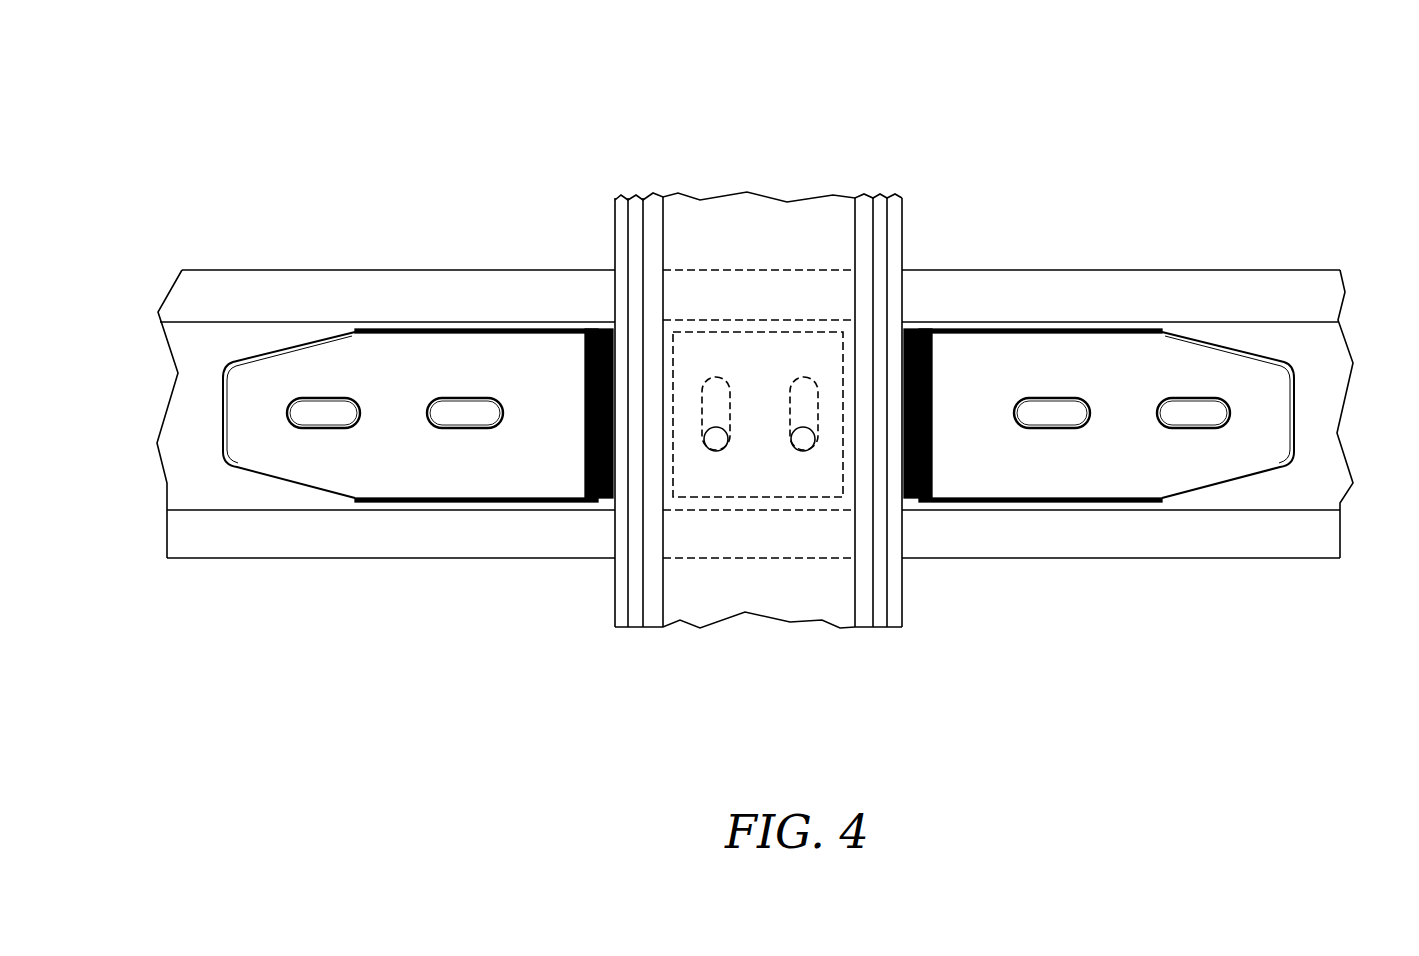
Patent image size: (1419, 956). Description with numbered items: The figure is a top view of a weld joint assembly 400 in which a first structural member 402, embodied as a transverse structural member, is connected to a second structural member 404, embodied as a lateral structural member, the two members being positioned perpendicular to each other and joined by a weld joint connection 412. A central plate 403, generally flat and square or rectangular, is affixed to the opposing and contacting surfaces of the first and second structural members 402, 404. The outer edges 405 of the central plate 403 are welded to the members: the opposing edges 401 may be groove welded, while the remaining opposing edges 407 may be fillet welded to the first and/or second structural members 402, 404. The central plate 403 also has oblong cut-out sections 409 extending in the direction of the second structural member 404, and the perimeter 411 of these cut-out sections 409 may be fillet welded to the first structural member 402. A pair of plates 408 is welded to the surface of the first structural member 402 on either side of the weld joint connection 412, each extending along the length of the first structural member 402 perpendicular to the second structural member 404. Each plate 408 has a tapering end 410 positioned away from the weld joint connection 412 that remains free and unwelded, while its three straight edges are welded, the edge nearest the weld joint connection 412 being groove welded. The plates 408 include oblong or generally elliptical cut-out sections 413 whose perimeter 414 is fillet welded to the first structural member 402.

The weld joint assembly 400 is at (1304, 68).
The opposing edges 401 is at (845, 369).
The first structural member 402 is at (358, 268).
The central plate 403 is at (723, 473).
The second structural member 404 is at (658, 197).
The outer edges 405 is at (688, 510).
The remaining opposing edges 407 is at (775, 330).
The plate 408 is at (322, 468).
The cut-out sections 409 is at (716, 394).
The tapering end 410 is at (185, 425).
The perimeter 411 is at (715, 428).
The weld joint connection 412 is at (601, 322).
The cut-out sections 413 is at (449, 438).
The perimeter 414 is at (350, 412).